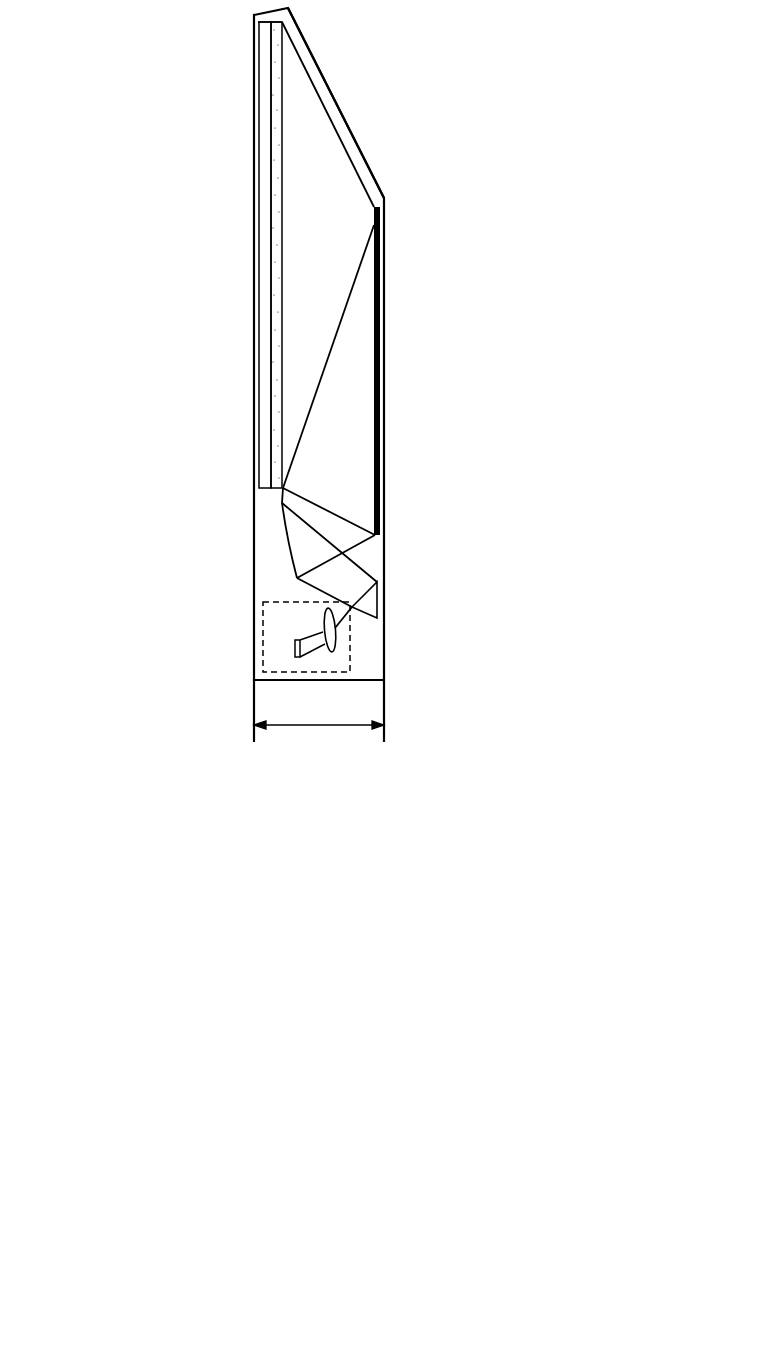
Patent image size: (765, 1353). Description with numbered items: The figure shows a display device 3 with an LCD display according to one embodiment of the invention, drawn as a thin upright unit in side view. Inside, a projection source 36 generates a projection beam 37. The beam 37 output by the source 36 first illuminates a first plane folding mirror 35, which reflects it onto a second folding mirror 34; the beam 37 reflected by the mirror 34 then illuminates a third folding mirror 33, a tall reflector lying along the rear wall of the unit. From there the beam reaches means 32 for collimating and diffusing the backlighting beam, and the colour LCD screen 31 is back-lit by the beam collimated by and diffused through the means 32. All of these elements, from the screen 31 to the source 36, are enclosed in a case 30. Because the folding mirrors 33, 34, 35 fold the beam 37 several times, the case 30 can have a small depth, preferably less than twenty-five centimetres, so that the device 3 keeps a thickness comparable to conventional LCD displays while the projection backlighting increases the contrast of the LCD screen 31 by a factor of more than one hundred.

The display device 3 is at (238, 397).
The case 30 is at (255, 582).
The colour LCD screen 31 is at (263, 145).
The means for collimating and diffusing 32 is at (272, 187).
The third folding mirror 33 is at (370, 290).
The second folding mirror 34 is at (293, 534).
The first plane folding mirror 35 is at (377, 600).
The projection source 36 is at (353, 662).
The projection beam 37 is at (331, 122).